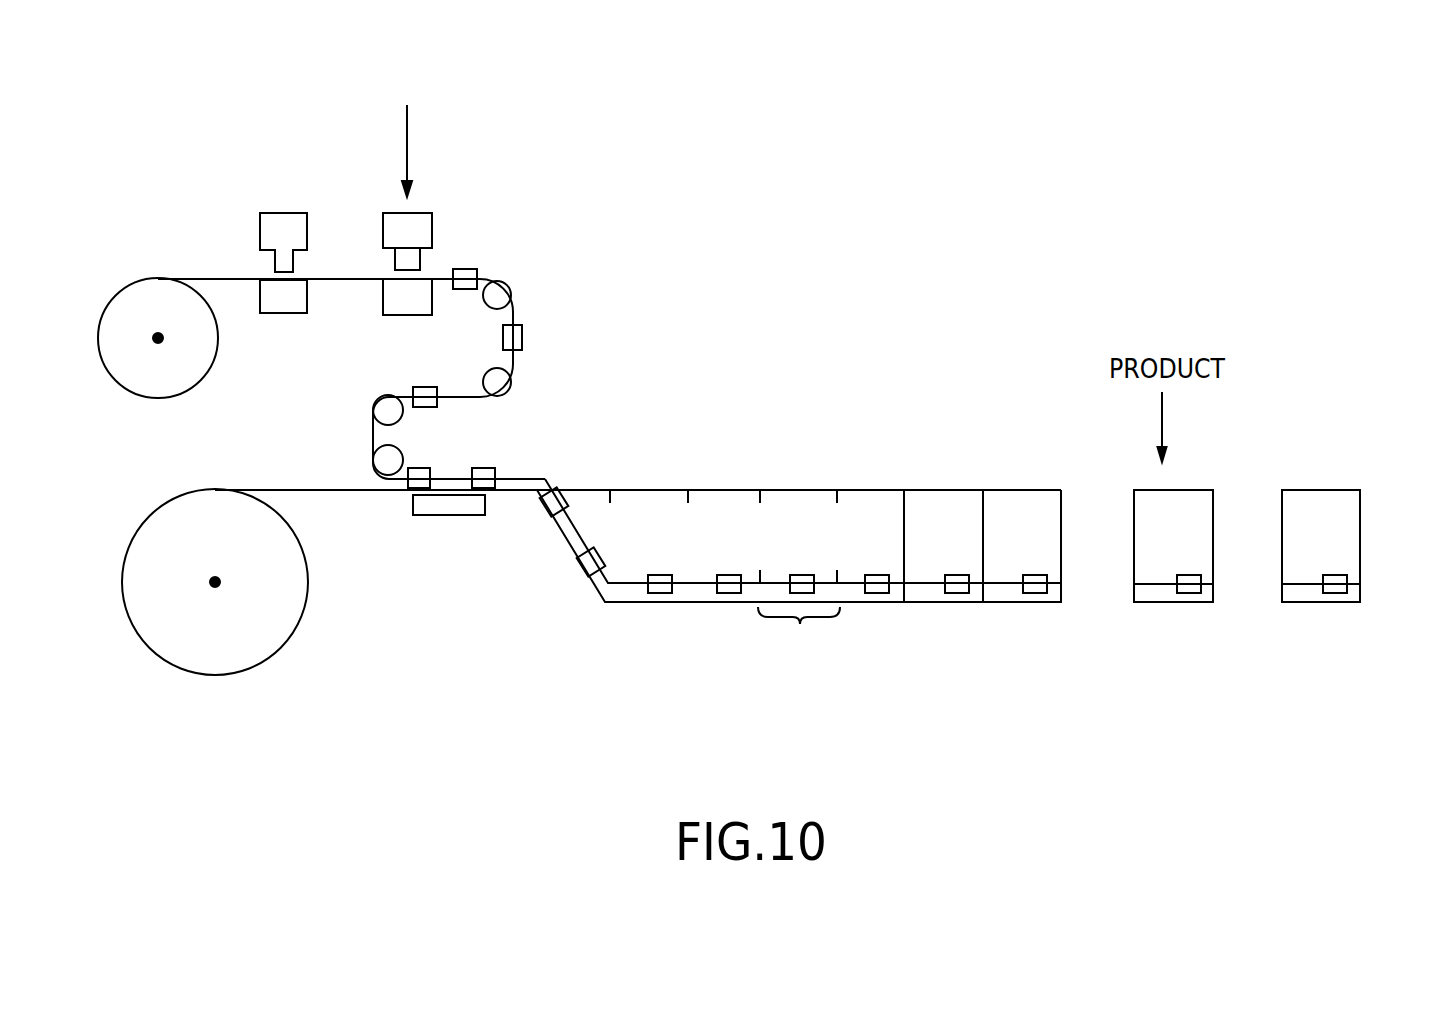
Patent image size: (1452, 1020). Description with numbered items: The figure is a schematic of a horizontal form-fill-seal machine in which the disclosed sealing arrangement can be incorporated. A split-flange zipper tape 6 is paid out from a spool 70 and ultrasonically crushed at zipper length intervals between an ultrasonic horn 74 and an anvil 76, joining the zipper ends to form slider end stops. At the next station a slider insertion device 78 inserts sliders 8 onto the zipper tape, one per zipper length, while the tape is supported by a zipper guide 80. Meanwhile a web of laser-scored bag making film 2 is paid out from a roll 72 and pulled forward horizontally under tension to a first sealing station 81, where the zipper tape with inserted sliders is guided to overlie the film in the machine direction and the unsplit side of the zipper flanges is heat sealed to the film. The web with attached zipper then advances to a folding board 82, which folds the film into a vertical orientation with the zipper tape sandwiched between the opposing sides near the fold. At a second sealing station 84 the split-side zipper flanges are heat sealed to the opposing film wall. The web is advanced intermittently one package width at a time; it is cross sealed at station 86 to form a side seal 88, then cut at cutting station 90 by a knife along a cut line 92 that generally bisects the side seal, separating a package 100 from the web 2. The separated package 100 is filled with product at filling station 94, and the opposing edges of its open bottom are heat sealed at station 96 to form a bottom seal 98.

The web of bag making film 2 is at (382, 485).
The split-flange zipper tape 6 is at (522, 359).
The sliders 8 is at (408, 257).
The spool 70 is at (107, 377).
The roll 72 is at (138, 643).
The ultrasonic horn 74 is at (260, 227).
The anvil 76 is at (278, 313).
The slider insertion device 78 is at (382, 227).
The zipper guide 80 is at (397, 315).
The first sealing station 81 is at (445, 510).
The folding board 82 is at (565, 545).
The second sealing station 84 is at (801, 645).
The cross sealing station 86 is at (908, 637).
The side seal 88 is at (906, 524).
The cutting station 90 is at (987, 637).
The cut line 92 is at (984, 532).
The filling station 94 is at (1172, 637).
The bottom sealing station 96 is at (1316, 637).
The bottom seal 98 is at (1335, 492).
The package 100 is at (1214, 515).